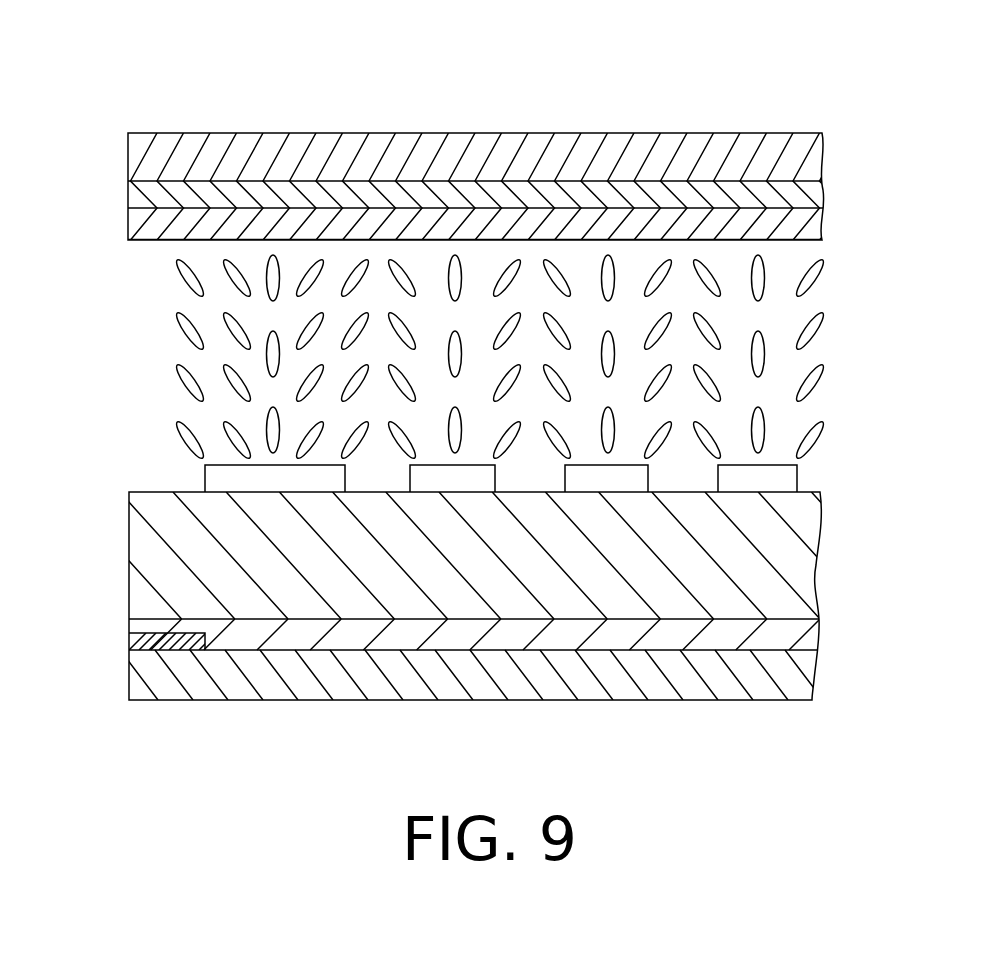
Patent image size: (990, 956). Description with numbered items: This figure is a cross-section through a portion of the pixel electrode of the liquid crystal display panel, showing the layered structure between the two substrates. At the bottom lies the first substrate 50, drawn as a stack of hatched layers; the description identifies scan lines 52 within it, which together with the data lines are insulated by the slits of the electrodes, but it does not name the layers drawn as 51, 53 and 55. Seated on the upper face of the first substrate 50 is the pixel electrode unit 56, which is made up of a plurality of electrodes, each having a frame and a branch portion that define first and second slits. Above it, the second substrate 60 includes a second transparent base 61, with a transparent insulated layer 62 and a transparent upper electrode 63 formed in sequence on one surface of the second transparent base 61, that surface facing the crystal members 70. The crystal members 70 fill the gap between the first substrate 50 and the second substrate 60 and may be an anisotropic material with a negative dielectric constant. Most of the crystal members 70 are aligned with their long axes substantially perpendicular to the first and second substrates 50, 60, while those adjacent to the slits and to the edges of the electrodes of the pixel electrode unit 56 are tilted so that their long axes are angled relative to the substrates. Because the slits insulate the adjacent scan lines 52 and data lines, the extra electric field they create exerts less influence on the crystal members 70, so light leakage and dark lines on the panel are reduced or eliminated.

The first substrate 50 is at (499, 541).
The lower substrate 51 is at (798, 675).
The scan lines 52 is at (143, 657).
The insulating layer 53 is at (790, 630).
The planarization layer 55 is at (790, 518).
The pixel electrode unit 56 is at (158, 463).
The second substrate 60 is at (539, 133).
The second transparent base 61 is at (788, 157).
The transparent insulated layer 62 is at (794, 198).
The transparent upper electrode 63 is at (792, 227).
The crystal members 70 is at (827, 313).